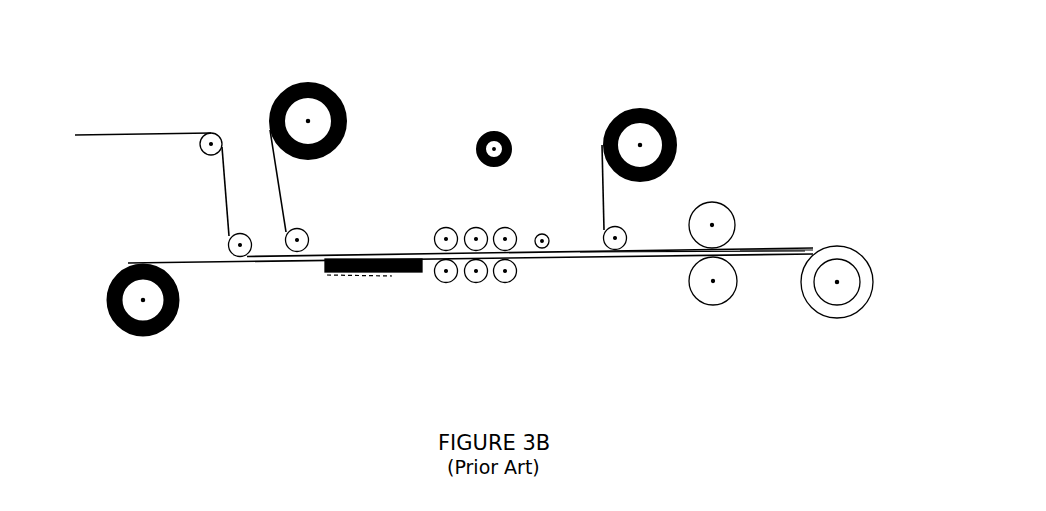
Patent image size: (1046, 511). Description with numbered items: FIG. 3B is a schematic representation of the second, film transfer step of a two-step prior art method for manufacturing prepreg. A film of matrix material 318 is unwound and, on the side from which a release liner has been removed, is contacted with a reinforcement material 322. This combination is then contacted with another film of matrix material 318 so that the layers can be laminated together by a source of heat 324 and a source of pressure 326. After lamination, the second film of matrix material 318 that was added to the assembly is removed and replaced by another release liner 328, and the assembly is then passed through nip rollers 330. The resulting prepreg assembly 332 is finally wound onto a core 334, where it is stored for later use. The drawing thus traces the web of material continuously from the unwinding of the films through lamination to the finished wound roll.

The web 318 is at (284, 207).
The incoming web 322 is at (140, 130).
The coating station 324 is at (375, 272).
The nip rollers 326 is at (493, 303).
The second web supply roll 328 is at (599, 227).
The laminating rollers 330 is at (722, 222).
The laminated web 332 is at (790, 253).
The take-up roll 334 is at (847, 270).